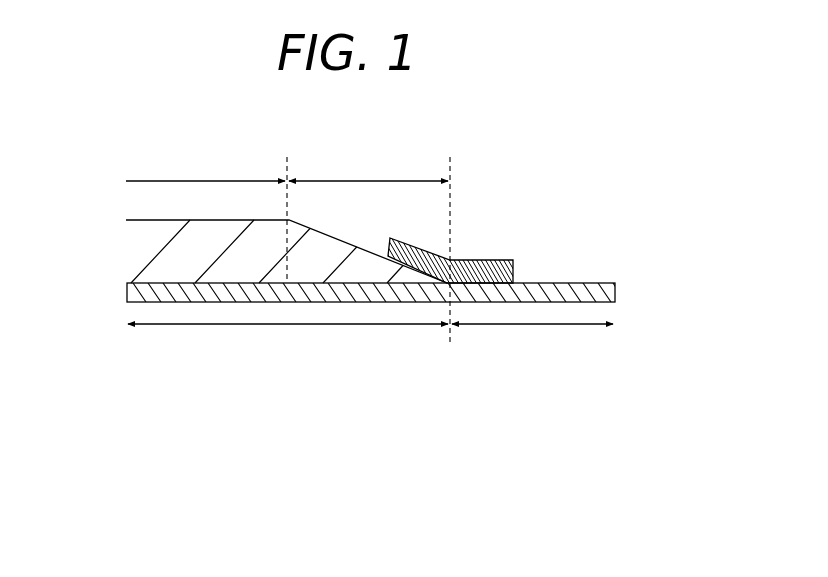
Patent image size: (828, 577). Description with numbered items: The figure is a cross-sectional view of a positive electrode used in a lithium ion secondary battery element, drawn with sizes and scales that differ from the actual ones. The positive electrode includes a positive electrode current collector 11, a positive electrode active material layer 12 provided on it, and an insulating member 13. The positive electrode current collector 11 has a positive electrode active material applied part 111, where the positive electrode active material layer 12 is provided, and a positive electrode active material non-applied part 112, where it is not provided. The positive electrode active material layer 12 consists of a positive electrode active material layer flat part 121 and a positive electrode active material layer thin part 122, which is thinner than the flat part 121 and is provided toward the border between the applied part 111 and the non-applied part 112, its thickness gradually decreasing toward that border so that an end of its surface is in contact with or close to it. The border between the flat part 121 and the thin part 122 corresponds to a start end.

The positive electrode current collector 11 is at (128, 290).
The positive electrode active material layer 12 is at (137, 248).
The insulating member 13 is at (515, 272).
The positive electrode active material applied part 111 is at (288, 341).
The positive electrode active material non-applied part 112 is at (531, 257).
The positive electrode active material layer flat part 121 is at (206, 216).
The positive electrode active material layer thin part 122 is at (368, 165).